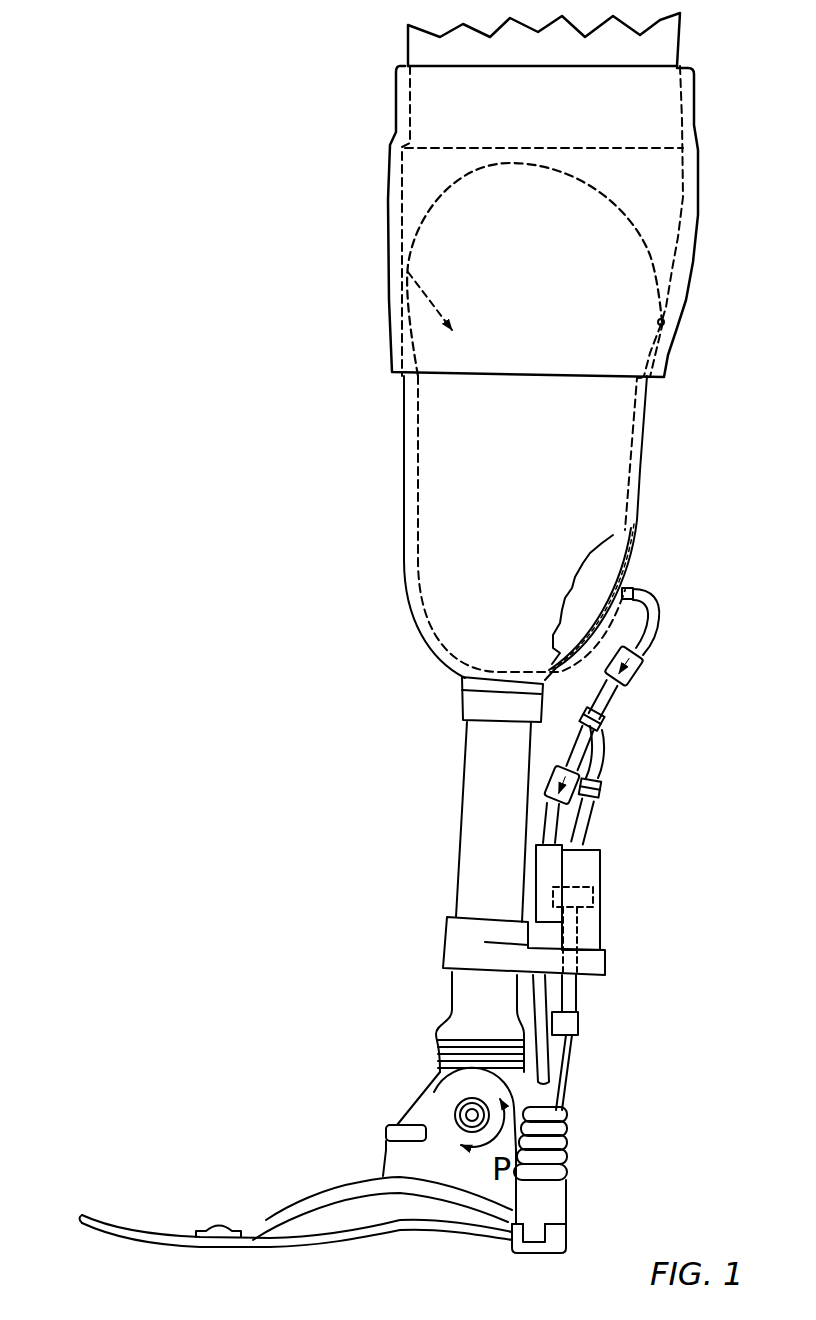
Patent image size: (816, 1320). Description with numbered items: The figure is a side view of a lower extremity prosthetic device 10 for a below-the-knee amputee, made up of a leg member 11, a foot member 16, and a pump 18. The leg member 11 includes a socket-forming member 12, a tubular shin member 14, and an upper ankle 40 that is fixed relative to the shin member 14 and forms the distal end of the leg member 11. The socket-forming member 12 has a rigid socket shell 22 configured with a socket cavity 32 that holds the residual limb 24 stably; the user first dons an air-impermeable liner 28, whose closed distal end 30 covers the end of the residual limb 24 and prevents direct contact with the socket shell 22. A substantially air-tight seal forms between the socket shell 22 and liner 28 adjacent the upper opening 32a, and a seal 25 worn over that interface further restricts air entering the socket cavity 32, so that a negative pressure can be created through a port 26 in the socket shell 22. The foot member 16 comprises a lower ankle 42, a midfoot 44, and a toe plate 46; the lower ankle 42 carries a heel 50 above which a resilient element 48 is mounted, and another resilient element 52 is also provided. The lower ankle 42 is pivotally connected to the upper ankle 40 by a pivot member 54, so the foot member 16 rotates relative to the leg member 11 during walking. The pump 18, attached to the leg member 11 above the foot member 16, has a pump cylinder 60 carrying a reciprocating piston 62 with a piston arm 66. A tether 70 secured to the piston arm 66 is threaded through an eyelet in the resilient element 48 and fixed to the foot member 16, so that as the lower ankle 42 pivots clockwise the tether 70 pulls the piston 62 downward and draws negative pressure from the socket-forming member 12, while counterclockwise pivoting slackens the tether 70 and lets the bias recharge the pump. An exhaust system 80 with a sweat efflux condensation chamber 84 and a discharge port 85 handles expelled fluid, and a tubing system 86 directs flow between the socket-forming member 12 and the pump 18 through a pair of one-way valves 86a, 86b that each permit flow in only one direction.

The prosthetic device 10 is at (116, 210).
The leg member 11 is at (312, 683).
The socket-forming member 12 is at (657, 415).
The shin member 14 is at (462, 850).
The foot member 16 is at (320, 1152).
The pump 18 is at (608, 866).
The socket shell 22 is at (390, 378).
The residual limb 24 is at (688, 130).
The seal 25 is at (396, 92).
The port 26 is at (634, 590).
The liner 28 is at (598, 568).
The distal end 30 is at (445, 660).
The socket cavity 32 is at (400, 262).
The upper opening 32a is at (662, 323).
The upper ankle 40 is at (412, 1110).
The lower ankle 42 is at (552, 1200).
The midfoot 44 is at (272, 1216).
The toe plate 46 is at (108, 1228).
The resilient element 48 is at (562, 1145).
The heel 50 is at (560, 1245).
The resilient element 52 is at (405, 1137).
The pivot member 54 is at (470, 1113).
The pump cylinder 60 is at (590, 932).
The piston 62 is at (600, 897).
The piston arm 66 is at (568, 1000).
The tether 70 is at (563, 1068).
The exhaust system 80 is at (547, 869).
The sweat efflux condensation chamber 84 is at (540, 903).
The discharge port 85 is at (551, 1088).
The tubing system 86 is at (652, 711).
The one-way valve 86a is at (641, 668).
The one-way valve 86b is at (549, 783).